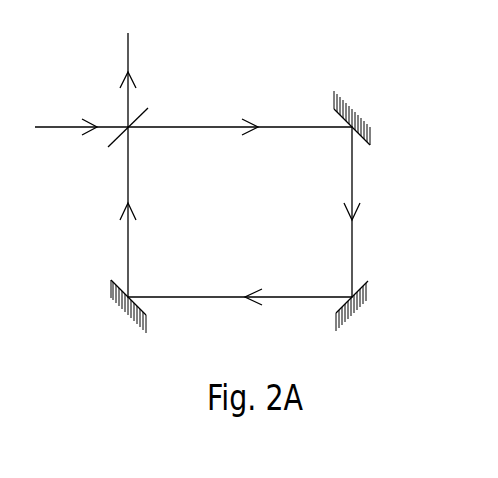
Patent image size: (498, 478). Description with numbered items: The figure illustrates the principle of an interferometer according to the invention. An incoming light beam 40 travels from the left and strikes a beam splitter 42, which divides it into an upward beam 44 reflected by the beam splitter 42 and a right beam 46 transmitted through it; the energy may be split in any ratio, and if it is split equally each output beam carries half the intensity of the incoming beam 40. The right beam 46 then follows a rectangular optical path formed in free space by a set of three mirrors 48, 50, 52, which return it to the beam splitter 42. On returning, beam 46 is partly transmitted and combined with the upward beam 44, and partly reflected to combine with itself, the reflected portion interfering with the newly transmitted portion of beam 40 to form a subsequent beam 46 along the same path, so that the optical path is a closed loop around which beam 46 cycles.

The incoming light beam 40 is at (60, 127).
The beam splitter 42 is at (119, 143).
The upward beam 44 is at (128, 62).
The right beam 46 is at (218, 127).
The mirror 48 is at (357, 112).
The mirror 50 is at (358, 305).
The mirror 52 is at (130, 315).